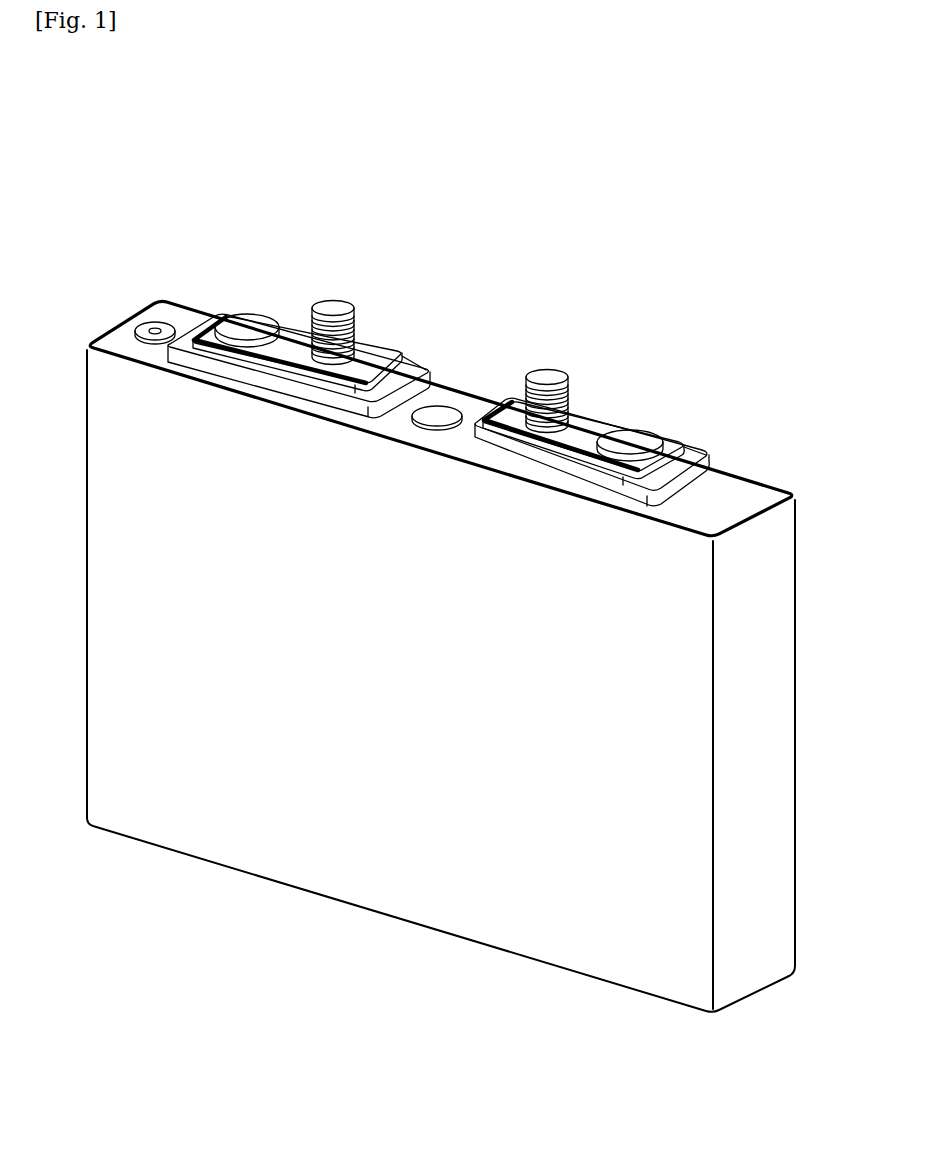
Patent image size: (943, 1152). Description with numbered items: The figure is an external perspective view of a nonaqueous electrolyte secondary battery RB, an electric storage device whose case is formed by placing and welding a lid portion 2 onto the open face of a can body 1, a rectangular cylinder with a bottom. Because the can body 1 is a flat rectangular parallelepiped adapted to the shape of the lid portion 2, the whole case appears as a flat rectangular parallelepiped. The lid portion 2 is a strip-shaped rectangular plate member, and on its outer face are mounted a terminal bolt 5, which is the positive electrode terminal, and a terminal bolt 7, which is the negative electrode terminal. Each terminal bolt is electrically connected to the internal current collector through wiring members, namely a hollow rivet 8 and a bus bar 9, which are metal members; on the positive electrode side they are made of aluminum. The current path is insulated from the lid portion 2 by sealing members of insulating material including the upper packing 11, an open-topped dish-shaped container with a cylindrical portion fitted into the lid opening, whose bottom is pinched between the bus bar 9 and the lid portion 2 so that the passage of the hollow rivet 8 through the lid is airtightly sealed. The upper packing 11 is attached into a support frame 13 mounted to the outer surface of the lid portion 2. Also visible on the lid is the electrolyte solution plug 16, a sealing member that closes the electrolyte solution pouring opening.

The nonaqueous electrolyte secondary battery RB is at (486, 218).
The can body 1 is at (296, 888).
The lid portion 2 is at (172, 310).
The terminal bolt 5 is at (320, 304).
The terminal bolt 7 is at (557, 370).
The hollow rivet 8 is at (247, 318).
The bus bar 9 is at (282, 350).
The upper packing 11 is at (334, 385).
The support frame 13 is at (414, 369).
The electrolyte solution plug 16 is at (136, 330).